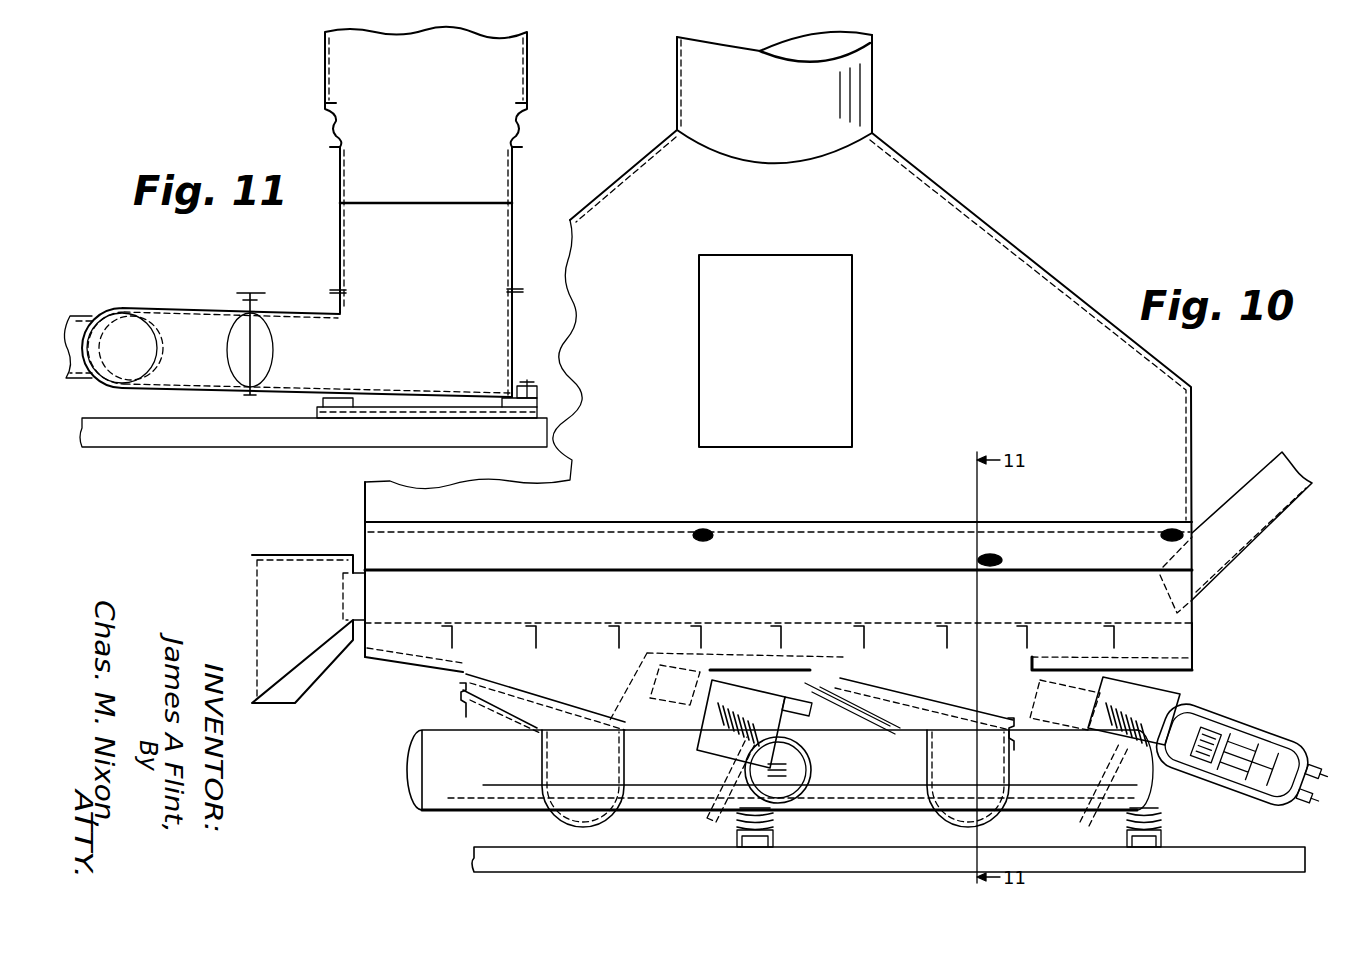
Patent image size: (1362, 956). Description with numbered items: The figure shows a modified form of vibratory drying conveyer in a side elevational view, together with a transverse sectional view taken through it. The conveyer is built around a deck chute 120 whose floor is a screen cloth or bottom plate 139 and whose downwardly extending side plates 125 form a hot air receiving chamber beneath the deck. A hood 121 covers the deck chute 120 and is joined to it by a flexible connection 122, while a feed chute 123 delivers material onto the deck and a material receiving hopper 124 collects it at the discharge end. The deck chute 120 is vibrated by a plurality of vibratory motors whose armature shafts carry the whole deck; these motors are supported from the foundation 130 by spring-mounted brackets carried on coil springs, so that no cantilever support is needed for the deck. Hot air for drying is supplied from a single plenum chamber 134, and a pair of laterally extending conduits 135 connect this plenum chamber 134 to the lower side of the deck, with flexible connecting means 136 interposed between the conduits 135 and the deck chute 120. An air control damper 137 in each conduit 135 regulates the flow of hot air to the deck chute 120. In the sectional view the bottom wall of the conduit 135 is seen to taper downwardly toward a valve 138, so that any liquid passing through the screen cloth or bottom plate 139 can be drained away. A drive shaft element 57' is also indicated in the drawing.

In FIG. 11, the eccentric drive shaft / pipe 57' is at (78, 316).
In FIG. 10, the eccentric drive shaft / pipe 57' is at (811, 770).
In FIG. 11, the deck chute 120 is at (426, 272).
In FIG. 10, the deck chute 120 is at (768, 592).
In FIG. 11, the hood 121 is at (523, 63).
In FIG. 10, the hood 121 is at (1020, 275).
In FIG. 11, the flexible connection 122 is at (522, 120).
In FIG. 10, the flexible connection 122 is at (884, 545).
In FIG. 10, the feed chute 123 is at (1250, 515).
In FIG. 10, the material receiving hopper 124 is at (268, 568).
In FIG. 11, the side plates 125 is at (510, 253).
In FIG. 10, the side plates 125 is at (778, 647).
In FIG. 11, the foundation 130 is at (313, 422).
In FIG. 10, the foundation 130 is at (888, 859).
In FIG. 11, the plenum chamber 134 is at (120, 342).
In FIG. 10, the plenum chamber 134 is at (450, 797).
In FIG. 11, the conduits 135 is at (193, 305).
In FIG. 10, the conduits 135 is at (465, 713).
In FIG. 11, the flexible connecting means 136 is at (513, 292).
In FIG. 10, the flexible connecting means 136 is at (460, 688).
In FIG. 11, the air control dampers 137 is at (264, 350).
In FIG. 11, the valve 138 is at (527, 382).
In FIG. 11, the screen cloth or bottom plate 139 is at (377, 202).
In FIG. 10, the screen cloth or bottom plate 139 is at (642, 622).